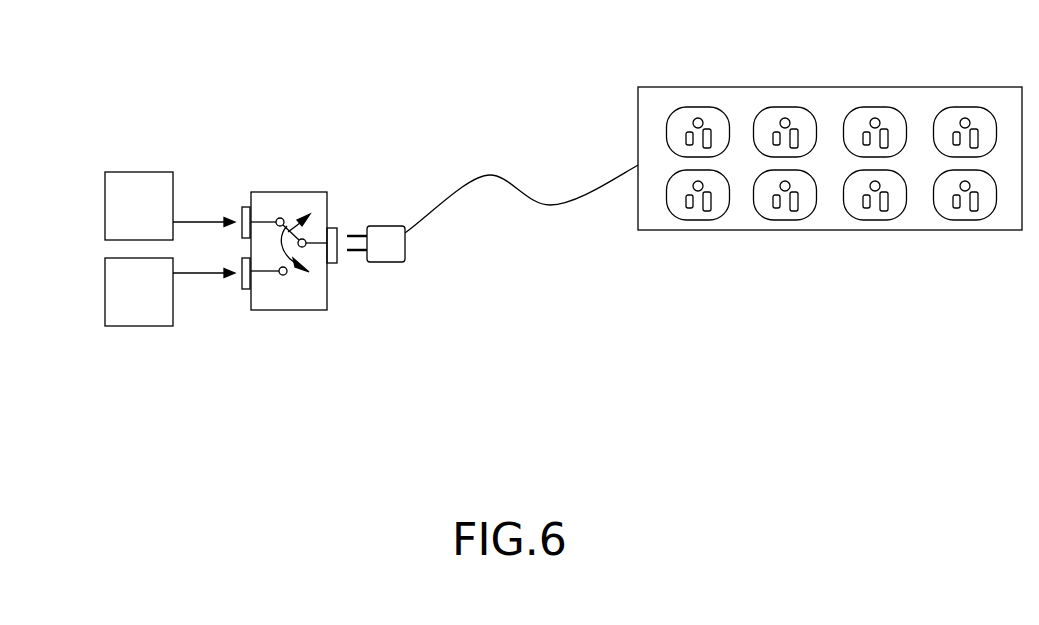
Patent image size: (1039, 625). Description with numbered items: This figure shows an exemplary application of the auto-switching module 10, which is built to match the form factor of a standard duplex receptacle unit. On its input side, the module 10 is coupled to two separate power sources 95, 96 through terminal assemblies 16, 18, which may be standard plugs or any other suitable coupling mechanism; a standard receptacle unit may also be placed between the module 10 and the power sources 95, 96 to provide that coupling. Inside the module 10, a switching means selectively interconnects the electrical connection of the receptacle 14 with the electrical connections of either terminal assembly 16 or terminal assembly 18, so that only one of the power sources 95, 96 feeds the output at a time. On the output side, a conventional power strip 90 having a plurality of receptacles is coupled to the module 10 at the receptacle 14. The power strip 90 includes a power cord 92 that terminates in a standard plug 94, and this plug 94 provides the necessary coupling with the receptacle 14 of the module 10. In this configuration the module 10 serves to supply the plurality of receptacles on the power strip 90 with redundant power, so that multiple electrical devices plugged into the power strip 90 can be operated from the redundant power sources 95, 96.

The auto-switching module 10 is at (283, 209).
The receptacle 14 is at (338, 228).
The terminal assembly 16 is at (243, 207).
The terminal assembly 18 is at (246, 289).
The power strip 90 is at (980, 87).
The power cord 92 is at (490, 175).
The plug 94 is at (390, 262).
The power source 95 is at (105, 172).
The power source 96 is at (105, 326).